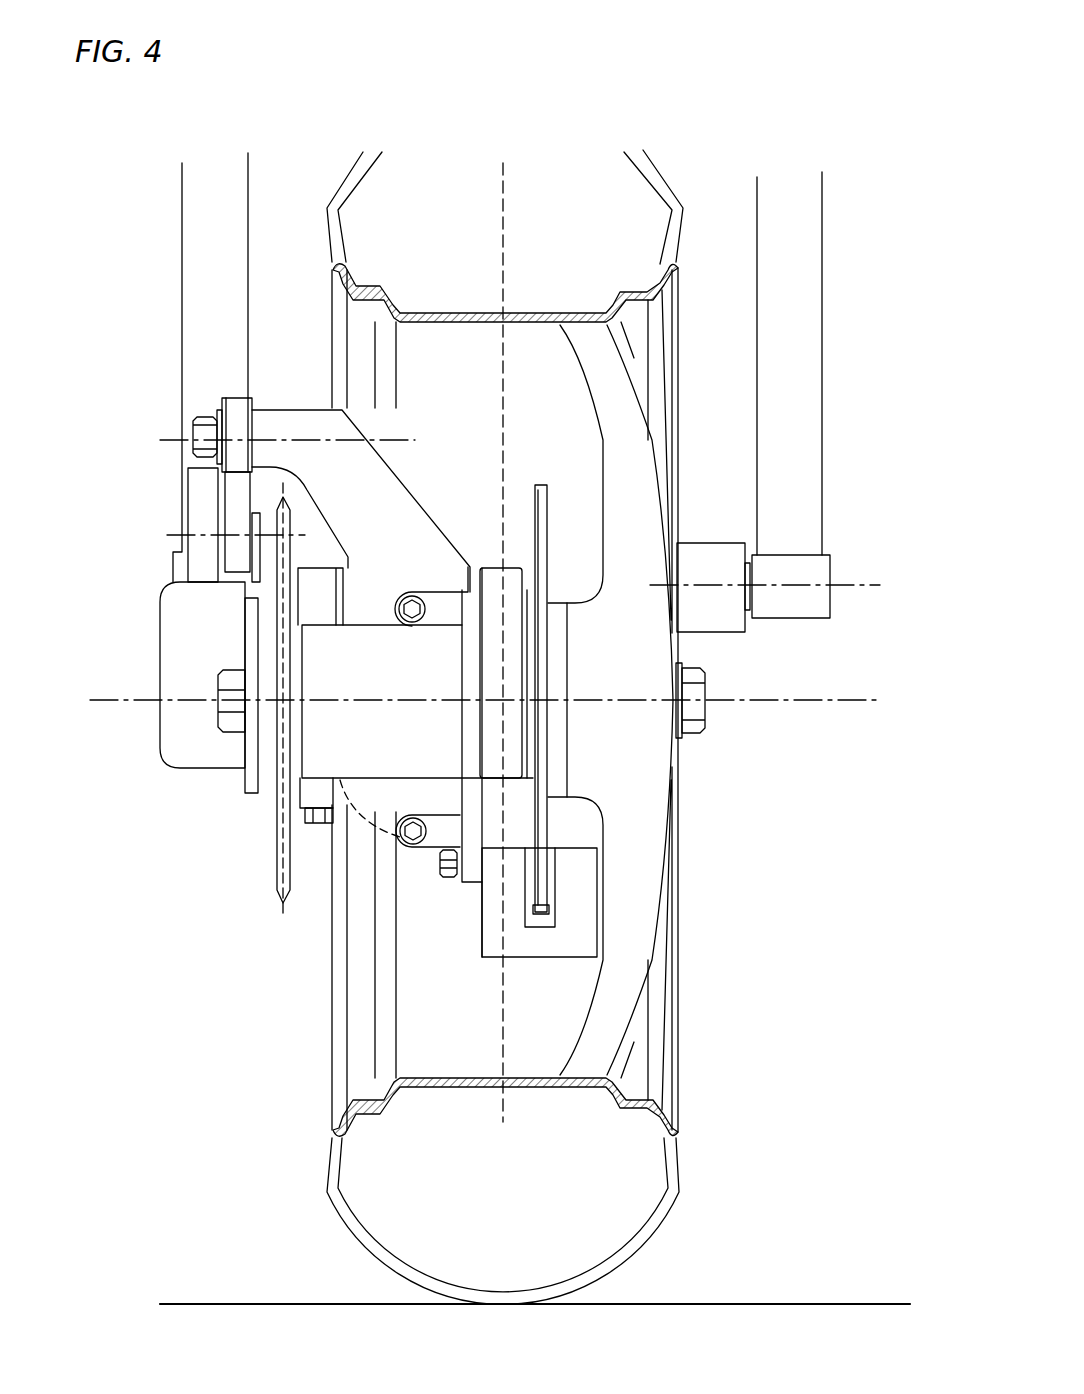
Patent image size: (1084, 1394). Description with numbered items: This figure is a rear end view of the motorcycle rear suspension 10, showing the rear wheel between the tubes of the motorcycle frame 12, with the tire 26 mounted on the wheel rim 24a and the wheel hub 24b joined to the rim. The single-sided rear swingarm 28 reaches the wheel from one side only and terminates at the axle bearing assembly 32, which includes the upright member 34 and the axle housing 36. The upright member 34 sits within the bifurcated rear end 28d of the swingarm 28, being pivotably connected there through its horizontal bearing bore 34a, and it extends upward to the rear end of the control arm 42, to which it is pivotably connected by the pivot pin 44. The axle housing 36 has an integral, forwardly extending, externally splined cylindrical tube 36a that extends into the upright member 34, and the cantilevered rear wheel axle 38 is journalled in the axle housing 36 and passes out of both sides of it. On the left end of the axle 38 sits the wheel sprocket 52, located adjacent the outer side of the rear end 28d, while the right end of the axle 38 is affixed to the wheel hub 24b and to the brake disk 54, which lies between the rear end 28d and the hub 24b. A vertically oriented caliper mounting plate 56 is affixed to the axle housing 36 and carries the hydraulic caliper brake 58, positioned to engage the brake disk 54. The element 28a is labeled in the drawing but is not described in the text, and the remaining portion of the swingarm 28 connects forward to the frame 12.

The suspension 10 is at (557, 727).
The motorcycle frame 12 is at (208, 222).
The wheel rim 24a is at (493, 1075).
The wheel hub 24b is at (642, 852).
The tire 26 is at (377, 1250).
The single-sided rear swingarm 28 is at (130, 642).
The axle block 28a is at (730, 632).
The bifurcated rear end 28d is at (315, 585).
The axle bearing assembly 32 is at (433, 508).
The upright member 34 is at (403, 503).
The horizontal bearing bore 34a is at (397, 795).
The axle housing 36 is at (350, 750).
The externally splined cylindrical tube 36a is at (360, 810).
The rear wheel axle 38 is at (693, 710).
The control arm 42 is at (235, 395).
The pivot pin 44 is at (193, 450).
The wheel sprocket 52 is at (268, 873).
The brake disk 54 is at (540, 487).
The caliper mounting plate 56 is at (470, 887).
The hydraulic caliper brake 58 is at (578, 947).